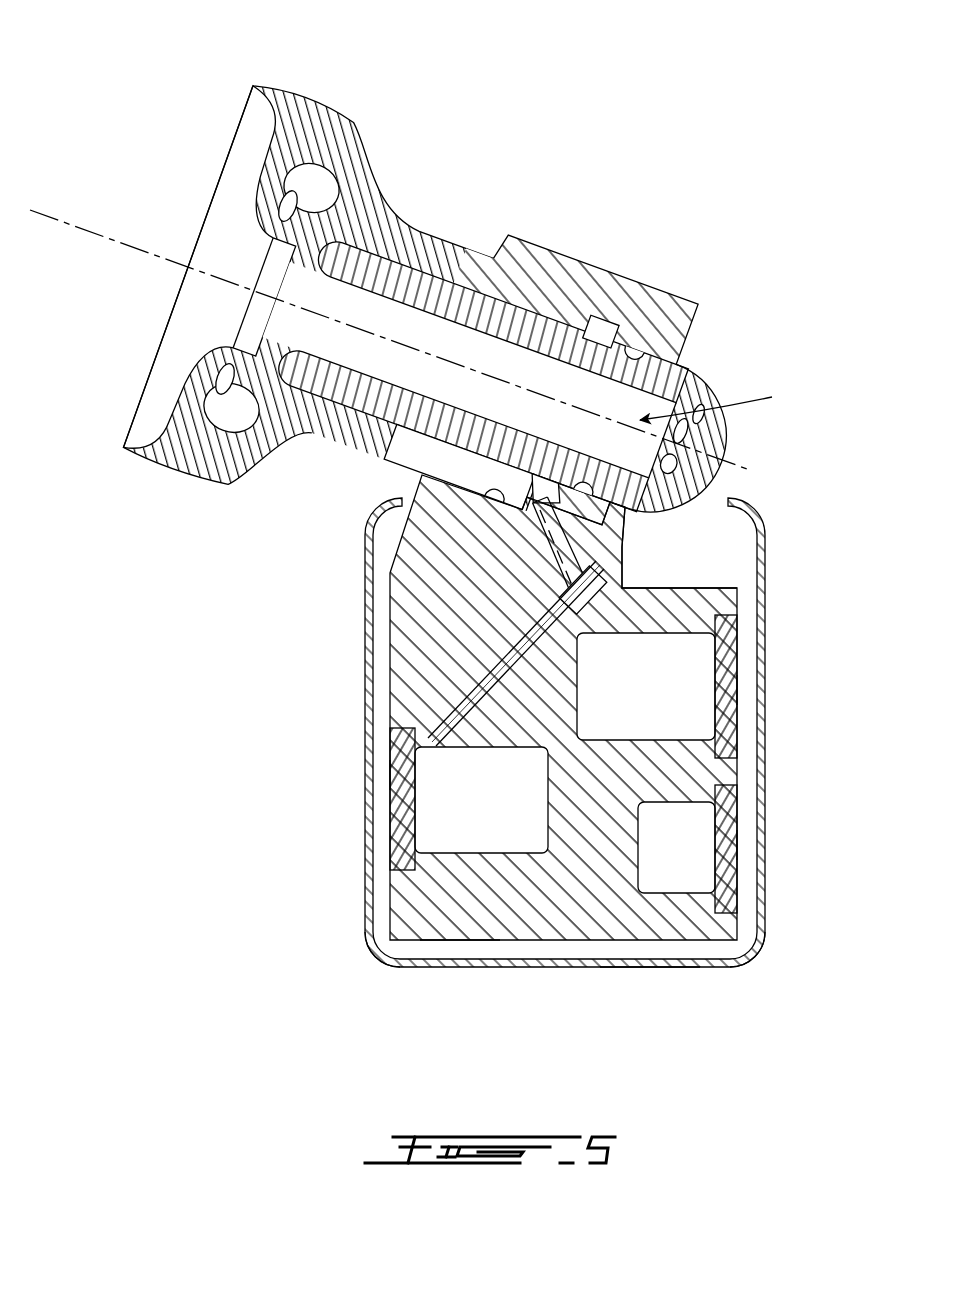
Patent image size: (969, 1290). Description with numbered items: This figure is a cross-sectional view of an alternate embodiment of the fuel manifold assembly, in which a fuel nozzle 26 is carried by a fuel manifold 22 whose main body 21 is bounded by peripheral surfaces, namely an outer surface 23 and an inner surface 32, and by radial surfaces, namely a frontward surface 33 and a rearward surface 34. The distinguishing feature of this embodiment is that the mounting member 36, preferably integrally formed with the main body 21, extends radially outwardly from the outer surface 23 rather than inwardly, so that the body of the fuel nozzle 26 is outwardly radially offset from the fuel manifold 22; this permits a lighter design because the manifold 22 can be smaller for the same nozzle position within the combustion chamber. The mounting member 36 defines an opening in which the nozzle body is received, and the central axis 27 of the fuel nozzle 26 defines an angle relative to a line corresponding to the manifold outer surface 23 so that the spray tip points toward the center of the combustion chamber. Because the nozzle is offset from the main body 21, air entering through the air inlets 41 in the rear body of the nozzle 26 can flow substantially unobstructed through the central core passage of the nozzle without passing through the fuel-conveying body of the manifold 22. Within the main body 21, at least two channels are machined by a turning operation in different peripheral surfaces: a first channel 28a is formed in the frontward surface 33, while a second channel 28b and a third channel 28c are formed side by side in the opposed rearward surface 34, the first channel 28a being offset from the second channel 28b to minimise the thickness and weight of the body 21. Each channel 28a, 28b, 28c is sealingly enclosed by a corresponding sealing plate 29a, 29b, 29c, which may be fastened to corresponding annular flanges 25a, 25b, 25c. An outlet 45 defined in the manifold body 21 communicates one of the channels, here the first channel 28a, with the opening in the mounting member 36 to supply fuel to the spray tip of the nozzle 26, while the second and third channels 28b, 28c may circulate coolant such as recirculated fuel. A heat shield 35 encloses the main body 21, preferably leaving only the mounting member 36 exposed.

The main body 21 is at (530, 915).
The fuel manifold 22 is at (459, 948).
The outer surface 23 is at (700, 585).
The annular flange 25a is at (400, 742).
The annular flange 25b is at (715, 740).
The annular flange 25c is at (735, 785).
The fuel nozzle 26 is at (370, 130).
The central axis 27 is at (147, 242).
The first channel 28a is at (470, 810).
The second channel 28b is at (690, 668).
The third channel 28c is at (680, 880).
The sealing plate 29a is at (400, 770).
The sealing plate 29b is at (728, 690).
The sealing plate 29c is at (735, 847).
The inner surface 32 is at (645, 942).
The frontward surface 33 is at (395, 905).
The rearward surface 34 is at (746, 921).
The heat shield 35 is at (372, 956).
The mounting member 36 is at (672, 320).
The air inlet 41 is at (722, 399).
The outlet 45 is at (490, 660).